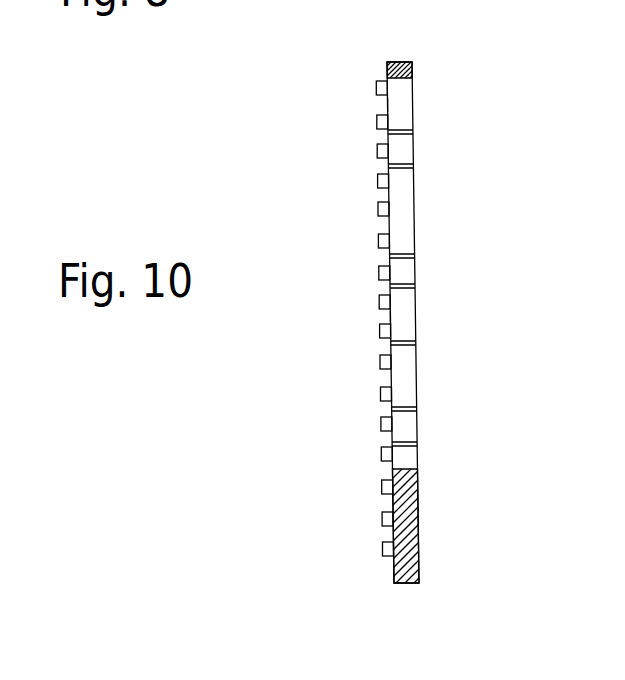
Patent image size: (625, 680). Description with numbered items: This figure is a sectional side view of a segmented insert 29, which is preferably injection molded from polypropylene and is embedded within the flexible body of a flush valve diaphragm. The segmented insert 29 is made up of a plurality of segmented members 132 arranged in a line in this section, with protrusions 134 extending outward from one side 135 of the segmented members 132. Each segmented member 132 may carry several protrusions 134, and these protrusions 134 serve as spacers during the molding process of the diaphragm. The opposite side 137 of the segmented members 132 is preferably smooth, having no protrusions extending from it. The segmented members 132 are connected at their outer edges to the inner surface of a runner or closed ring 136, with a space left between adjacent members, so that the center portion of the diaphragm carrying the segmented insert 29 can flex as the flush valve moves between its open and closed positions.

The segmented insert 29 is at (428, 288).
The segmented members 132 is at (413, 113).
The protrusions 134 is at (378, 240).
The side 135 is at (386, 105).
The closed ring 136 is at (397, 62).
The opposite side 137 is at (417, 360).